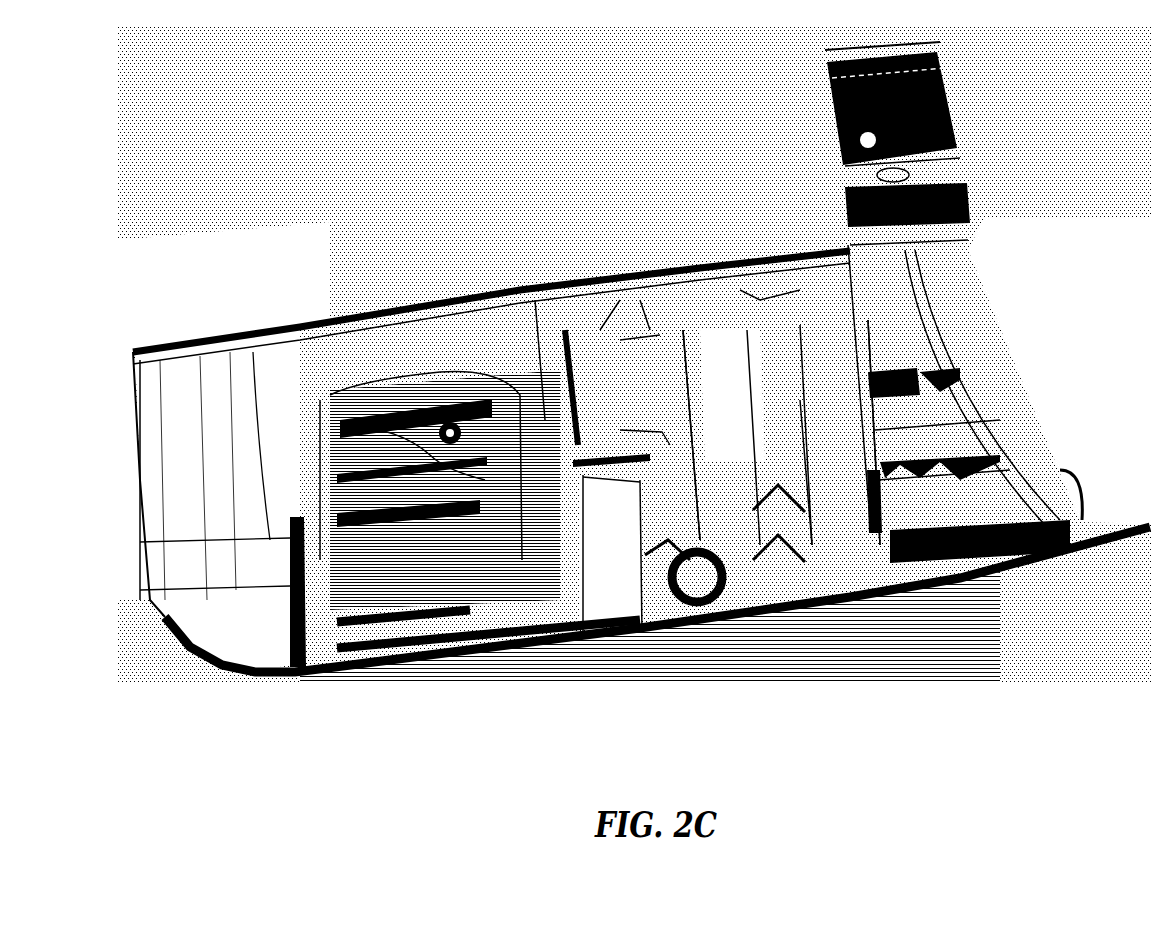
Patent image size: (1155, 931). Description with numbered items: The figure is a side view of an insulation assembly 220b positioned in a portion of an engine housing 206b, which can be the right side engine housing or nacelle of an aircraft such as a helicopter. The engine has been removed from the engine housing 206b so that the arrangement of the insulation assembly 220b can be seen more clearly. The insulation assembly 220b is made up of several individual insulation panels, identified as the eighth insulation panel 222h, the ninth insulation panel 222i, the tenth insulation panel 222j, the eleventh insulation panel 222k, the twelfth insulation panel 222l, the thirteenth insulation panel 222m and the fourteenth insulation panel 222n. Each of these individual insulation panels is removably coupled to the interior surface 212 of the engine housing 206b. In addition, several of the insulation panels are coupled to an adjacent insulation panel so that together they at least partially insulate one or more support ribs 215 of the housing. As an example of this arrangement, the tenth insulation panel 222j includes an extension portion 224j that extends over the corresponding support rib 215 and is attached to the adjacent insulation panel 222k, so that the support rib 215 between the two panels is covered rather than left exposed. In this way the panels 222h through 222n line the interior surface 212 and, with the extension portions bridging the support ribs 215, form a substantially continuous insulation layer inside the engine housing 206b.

The insulation assembly 220b is at (235, 130).
The interior surface 212 is at (535, 357).
The extension portion 224j is at (643, 323).
The tenth insulation panel 222j is at (708, 360).
The engine housing 206b is at (762, 262).
The fourteenth insulation panel 222n is at (922, 112).
The thirteenth insulation panel 222m is at (933, 198).
The twelfth insulation panel 222l is at (953, 330).
The eighth insulation panel 222h is at (178, 475).
The ninth insulation panel 222i is at (612, 595).
The support rib 215 is at (668, 540).
The eleventh insulation panel 222k is at (837, 550).